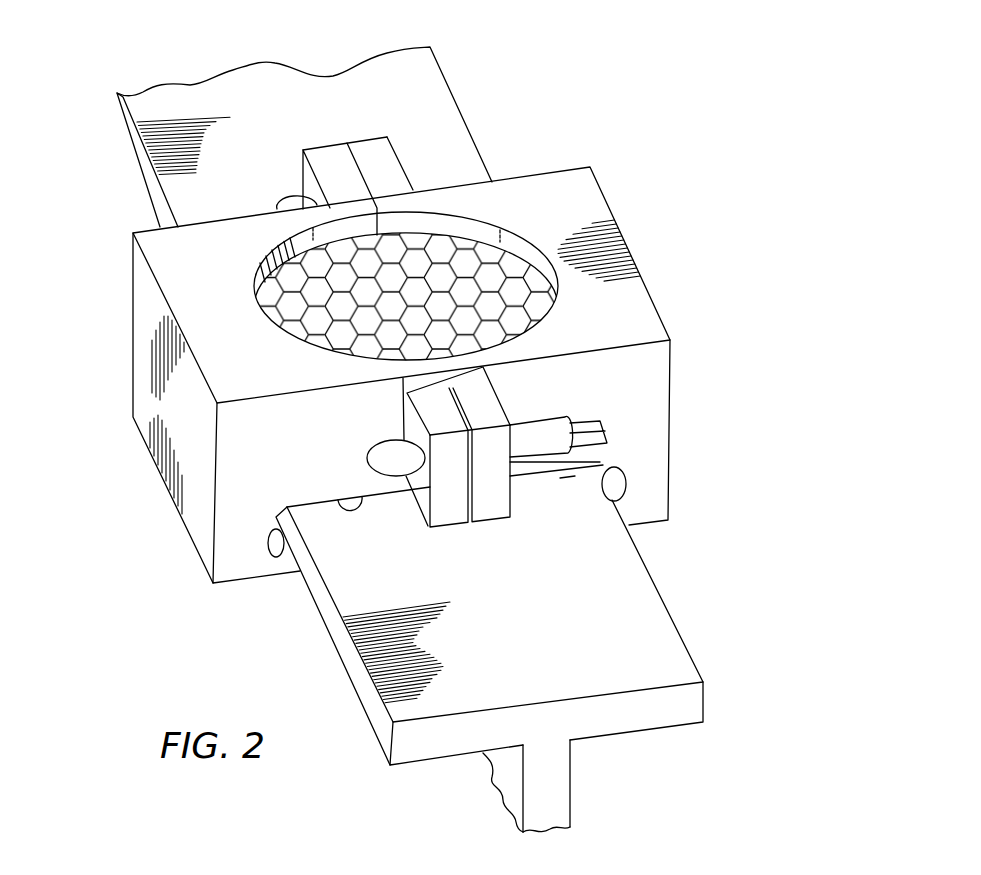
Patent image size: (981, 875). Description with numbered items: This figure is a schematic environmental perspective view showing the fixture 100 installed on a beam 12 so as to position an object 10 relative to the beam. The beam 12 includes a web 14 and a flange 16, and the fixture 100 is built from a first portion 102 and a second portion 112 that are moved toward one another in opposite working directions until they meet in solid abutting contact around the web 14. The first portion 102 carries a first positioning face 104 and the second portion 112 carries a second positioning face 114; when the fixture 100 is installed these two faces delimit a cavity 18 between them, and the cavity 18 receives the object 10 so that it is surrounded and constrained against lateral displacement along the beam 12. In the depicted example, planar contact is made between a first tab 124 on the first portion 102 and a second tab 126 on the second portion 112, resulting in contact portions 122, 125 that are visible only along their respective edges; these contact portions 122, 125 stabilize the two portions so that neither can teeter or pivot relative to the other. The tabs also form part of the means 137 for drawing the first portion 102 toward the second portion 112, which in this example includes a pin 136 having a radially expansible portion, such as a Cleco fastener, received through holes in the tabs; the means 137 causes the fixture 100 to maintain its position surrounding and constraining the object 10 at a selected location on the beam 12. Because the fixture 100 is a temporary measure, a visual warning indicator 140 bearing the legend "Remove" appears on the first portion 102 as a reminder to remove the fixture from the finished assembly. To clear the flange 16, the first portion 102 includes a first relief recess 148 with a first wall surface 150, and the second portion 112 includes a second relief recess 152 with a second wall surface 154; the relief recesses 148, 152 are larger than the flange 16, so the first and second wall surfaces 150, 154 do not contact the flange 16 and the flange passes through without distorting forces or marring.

The object 10 is at (405, 300).
The beam 12 is at (722, 649).
The web 14 is at (555, 773).
The flange 16 is at (427, 740).
The cavity 18 is at (452, 220).
The fixture 100 is at (680, 205).
The first portion 102 is at (160, 576).
The first positioning face 104 is at (292, 247).
The second portion 112 is at (724, 549).
The second positioning face 114 is at (482, 232).
The contact portion 122 is at (440, 383).
The first tab 124 is at (447, 528).
The contact portion 125 is at (403, 400).
The second tab 126 is at (490, 518).
The pin 136 is at (555, 422).
The means for drawing the first portion toward the second portion 137 is at (578, 583).
The visual warning indicator 140 is at (176, 242).
The first relief recess 148 is at (272, 557).
The first wall surface 150 is at (340, 497).
The second relief recess 152 is at (622, 500).
The second wall surface 154 is at (560, 478).